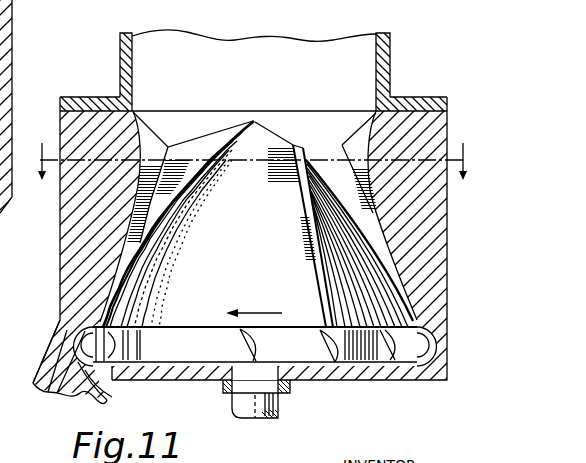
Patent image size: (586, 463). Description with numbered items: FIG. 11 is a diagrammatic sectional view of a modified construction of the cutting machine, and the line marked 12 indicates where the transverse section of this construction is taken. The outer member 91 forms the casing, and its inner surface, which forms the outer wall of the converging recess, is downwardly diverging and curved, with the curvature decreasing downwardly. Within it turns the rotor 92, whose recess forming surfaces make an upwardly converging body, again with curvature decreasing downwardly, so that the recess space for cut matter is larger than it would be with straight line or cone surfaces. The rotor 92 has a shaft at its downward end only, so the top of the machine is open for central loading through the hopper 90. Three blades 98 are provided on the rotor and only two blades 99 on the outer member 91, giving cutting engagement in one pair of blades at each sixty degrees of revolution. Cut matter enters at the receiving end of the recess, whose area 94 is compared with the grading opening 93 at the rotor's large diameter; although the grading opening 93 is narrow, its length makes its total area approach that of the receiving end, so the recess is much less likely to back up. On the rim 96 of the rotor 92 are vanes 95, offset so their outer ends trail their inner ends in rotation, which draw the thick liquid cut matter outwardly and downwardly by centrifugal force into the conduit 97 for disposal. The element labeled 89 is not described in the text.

The wall 89 is at (0, 3).
The hopper 90 is at (387, 48).
The outer member 91 is at (77, 278).
The rotor 92 is at (148, 244).
The grading opening 93 is at (80, 330).
The area of the receiving end of the recess 94 is at (178, 152).
The vanes 95 is at (345, 352).
The rim 96 is at (151, 352).
The conduit 97 is at (40, 386).
The blades 98 is at (270, 140).
The blades 99 is at (358, 140).
The section line 12- 12 is at (255, 177).